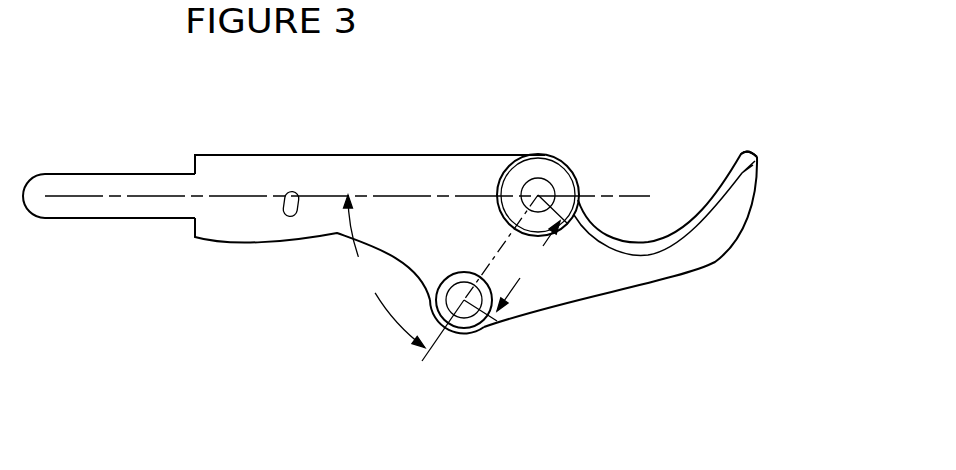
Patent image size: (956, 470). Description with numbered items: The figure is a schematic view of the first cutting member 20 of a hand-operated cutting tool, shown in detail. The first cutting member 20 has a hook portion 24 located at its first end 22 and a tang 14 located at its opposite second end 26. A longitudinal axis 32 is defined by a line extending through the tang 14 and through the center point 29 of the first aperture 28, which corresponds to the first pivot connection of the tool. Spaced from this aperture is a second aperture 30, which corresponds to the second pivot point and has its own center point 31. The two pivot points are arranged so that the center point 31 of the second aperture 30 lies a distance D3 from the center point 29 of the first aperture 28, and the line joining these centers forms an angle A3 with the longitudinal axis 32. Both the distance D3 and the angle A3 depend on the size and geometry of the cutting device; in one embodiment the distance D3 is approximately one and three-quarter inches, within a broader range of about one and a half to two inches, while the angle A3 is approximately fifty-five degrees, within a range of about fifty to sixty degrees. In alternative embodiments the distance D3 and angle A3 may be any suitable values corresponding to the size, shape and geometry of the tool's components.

The tang 14 is at (72, 173).
The first cutting member 20 is at (463, 153).
The first end 22 is at (788, 153).
The hook portion 24 is at (685, 227).
The second end 26 is at (202, 257).
The first aperture 28 is at (566, 163).
The center point of first aperture 29 is at (527, 184).
The second aperture 30 is at (464, 336).
The center point of second aperture 31 is at (476, 312).
The longitudinal axis 32 is at (247, 194).
The angle A3 is at (385, 271).
The distance D3 is at (495, 278).